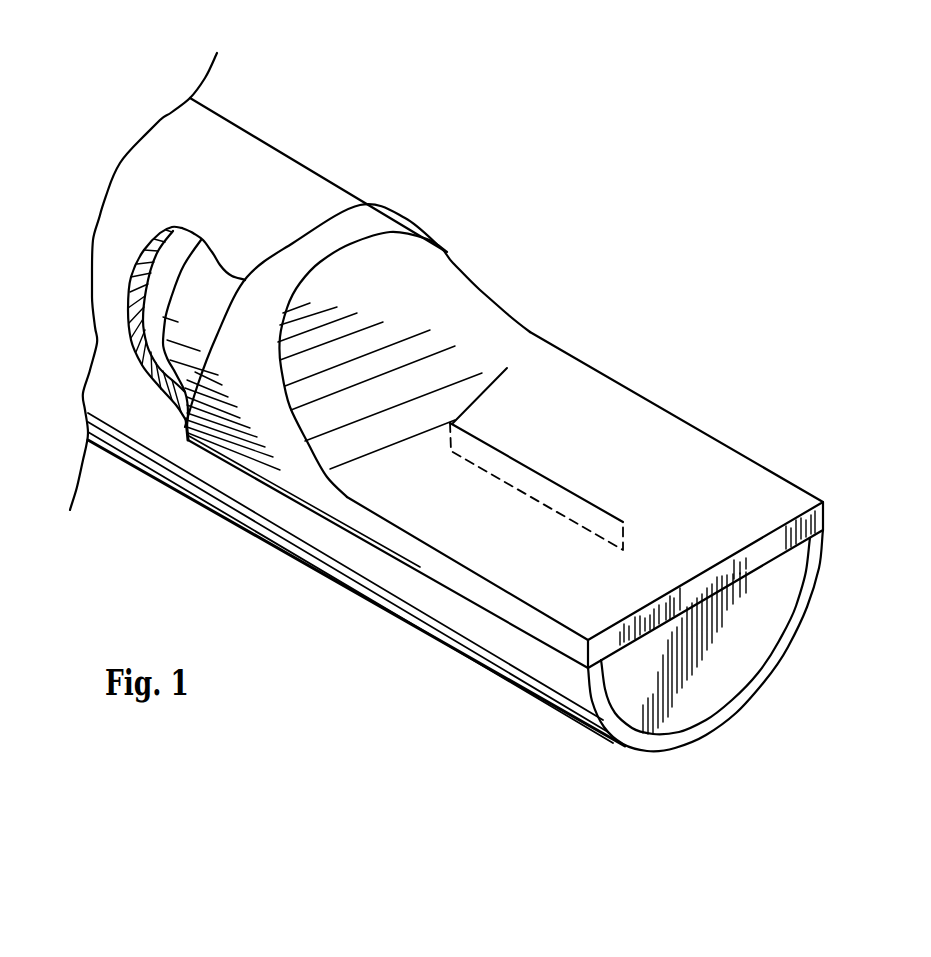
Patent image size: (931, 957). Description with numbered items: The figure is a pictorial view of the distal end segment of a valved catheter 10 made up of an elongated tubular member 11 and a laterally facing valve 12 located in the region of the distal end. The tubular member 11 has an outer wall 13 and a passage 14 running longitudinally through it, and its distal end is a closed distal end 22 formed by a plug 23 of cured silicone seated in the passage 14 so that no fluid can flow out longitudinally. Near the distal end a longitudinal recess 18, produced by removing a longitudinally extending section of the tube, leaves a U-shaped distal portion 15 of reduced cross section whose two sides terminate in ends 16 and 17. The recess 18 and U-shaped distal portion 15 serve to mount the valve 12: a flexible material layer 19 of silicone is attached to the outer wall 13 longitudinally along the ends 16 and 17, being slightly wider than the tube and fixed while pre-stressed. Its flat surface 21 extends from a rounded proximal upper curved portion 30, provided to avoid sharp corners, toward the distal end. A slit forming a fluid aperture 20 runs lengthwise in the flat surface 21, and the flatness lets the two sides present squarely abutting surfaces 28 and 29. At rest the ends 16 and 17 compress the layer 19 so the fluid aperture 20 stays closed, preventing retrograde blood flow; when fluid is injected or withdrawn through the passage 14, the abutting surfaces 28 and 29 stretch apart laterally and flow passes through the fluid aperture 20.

The valved catheter 10 is at (596, 54).
The elongated tubular member 11 is at (293, 167).
The laterally facing valve 12 is at (717, 440).
The outer wall 13 is at (143, 333).
The passage 14 is at (153, 288).
The U-shaped distal portion 15 is at (512, 850).
The end of U-shaped distal portion 16 is at (587, 667).
The end of U-shaped distal portion 17 is at (821, 542).
The longitudinal recess 18 is at (622, 272).
The flexible material layer 19 is at (427, 567).
The fluid aperture 20 is at (453, 423).
The flat surface 21 is at (547, 577).
The closed distal end 22 is at (723, 718).
The plug 23 is at (733, 677).
The abutting slit surface 28 is at (420, 527).
The abutting slit surface 29 is at (340, 580).
The upper curved portion 30 is at (430, 287).